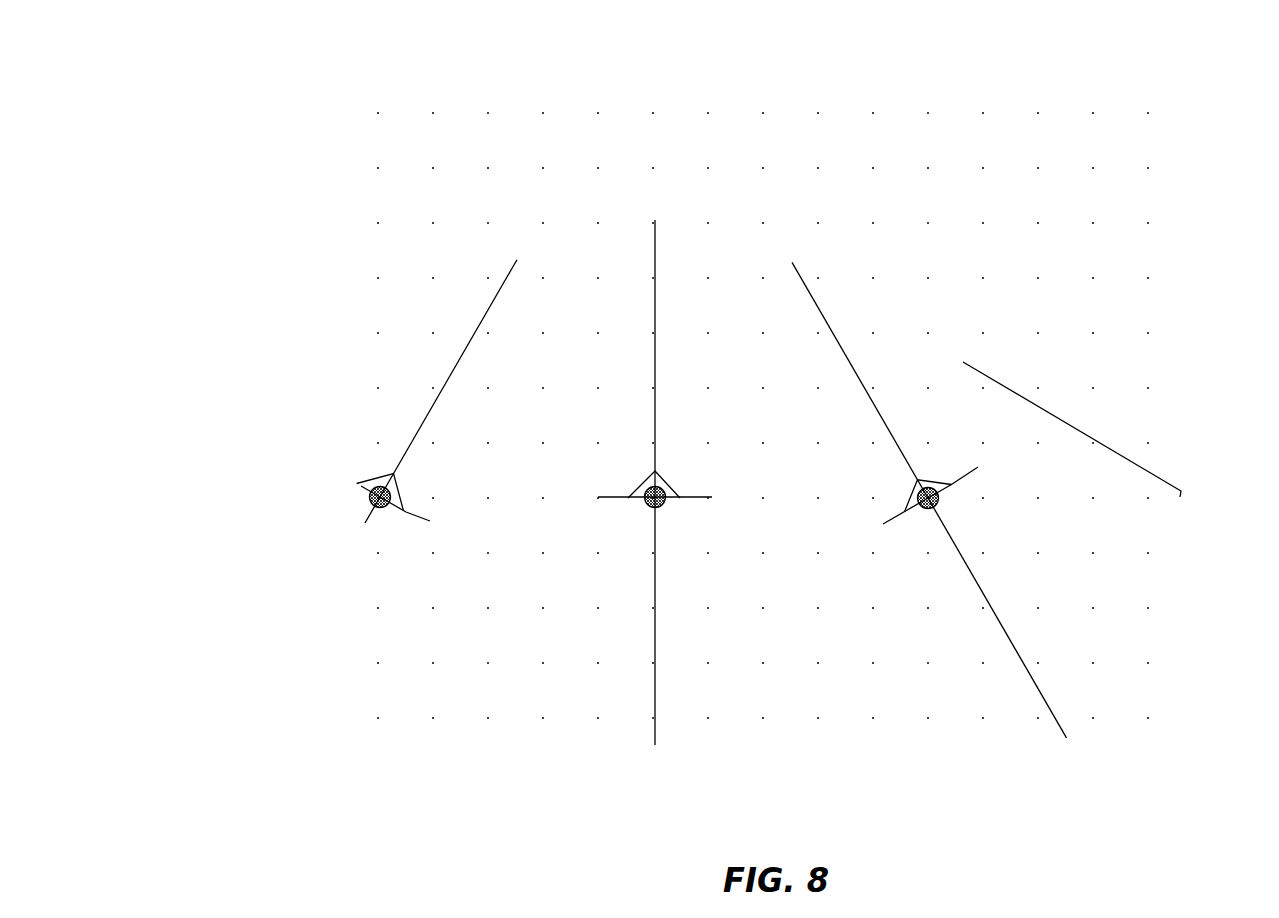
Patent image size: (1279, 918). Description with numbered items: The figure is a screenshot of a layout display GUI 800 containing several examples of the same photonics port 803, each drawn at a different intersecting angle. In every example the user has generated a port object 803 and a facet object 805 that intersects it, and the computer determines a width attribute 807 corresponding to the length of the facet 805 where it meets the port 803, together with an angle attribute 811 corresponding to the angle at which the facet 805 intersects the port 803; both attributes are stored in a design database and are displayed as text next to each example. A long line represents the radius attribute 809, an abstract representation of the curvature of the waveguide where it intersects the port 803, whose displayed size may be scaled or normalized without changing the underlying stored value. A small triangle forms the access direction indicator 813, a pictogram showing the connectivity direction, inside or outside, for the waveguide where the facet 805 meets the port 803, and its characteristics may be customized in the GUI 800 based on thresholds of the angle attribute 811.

The layout display GUI 800 is at (284, 77).
The photonics port 803 is at (953, 509).
The facet 805 is at (886, 536).
The width attribute 807 is at (1019, 440).
The radius attribute 809 is at (826, 300).
The angle attribute 811 is at (1101, 443).
The access direction indicator 813 is at (896, 478).